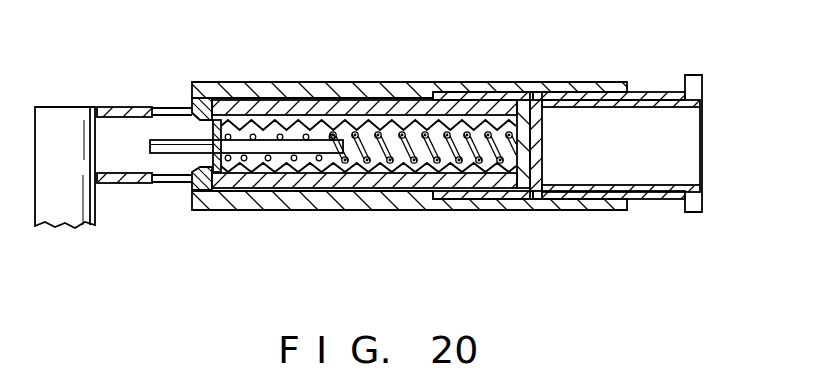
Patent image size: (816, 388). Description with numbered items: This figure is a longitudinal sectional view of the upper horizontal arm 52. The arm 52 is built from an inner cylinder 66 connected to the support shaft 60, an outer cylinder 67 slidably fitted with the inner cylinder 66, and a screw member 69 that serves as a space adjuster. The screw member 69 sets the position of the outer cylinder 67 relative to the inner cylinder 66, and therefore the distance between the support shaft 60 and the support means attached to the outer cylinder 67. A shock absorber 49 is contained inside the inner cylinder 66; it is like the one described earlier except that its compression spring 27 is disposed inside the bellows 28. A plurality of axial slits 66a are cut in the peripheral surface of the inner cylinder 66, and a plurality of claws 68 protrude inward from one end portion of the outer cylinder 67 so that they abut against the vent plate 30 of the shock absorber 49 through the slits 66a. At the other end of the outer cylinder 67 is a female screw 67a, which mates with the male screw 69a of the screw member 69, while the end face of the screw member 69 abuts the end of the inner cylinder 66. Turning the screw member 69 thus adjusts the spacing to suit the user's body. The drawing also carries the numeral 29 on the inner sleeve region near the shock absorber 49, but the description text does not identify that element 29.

The tension adjusting unit 52 is at (397, 64).
The frame member 60 is at (88, 106).
The guide tube 66 is at (125, 106).
The reduced end portion of guide tube 66a is at (165, 184).
The stopper blocks 68 is at (190, 104).
The outer cylinder 67 is at (330, 88).
The inner stepped portion of outer cylinder 67a is at (458, 94).
The sleeve of end cap 69a is at (650, 88).
The end cap 69 is at (695, 75).
The end plate 30 is at (218, 190).
The rod 49 is at (315, 164).
The coil spring 28 is at (377, 165).
The spring coils 27 is at (438, 160).
The inner cup sleeve 29 is at (518, 162).